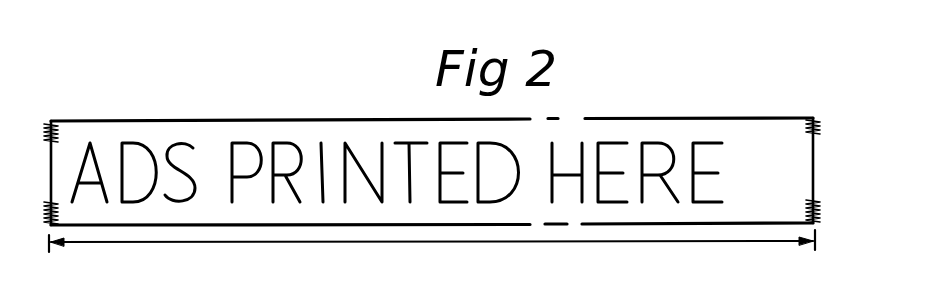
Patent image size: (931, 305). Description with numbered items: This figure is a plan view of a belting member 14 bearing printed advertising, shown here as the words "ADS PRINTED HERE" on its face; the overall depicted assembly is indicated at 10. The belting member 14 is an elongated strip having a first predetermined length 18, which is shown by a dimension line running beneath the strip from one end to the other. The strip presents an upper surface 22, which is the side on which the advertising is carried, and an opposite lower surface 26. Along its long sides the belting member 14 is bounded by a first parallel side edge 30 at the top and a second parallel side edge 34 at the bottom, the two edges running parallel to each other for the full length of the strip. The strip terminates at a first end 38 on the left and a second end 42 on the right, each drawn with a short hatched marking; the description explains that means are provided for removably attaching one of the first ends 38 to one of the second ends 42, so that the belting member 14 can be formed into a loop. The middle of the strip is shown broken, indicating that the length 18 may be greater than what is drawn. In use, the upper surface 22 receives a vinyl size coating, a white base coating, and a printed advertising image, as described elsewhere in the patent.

The sign assembly 10 is at (613, 99).
The belting member 14 is at (783, 128).
The first predetermined length 18 is at (473, 243).
The upper surface 22 is at (787, 187).
The lower surface 26 is at (716, 118).
The first parallel side edge 30 is at (121, 121).
The second parallel side edge 34 is at (232, 226).
The first end 38 is at (50, 163).
The second end 42 is at (815, 165).